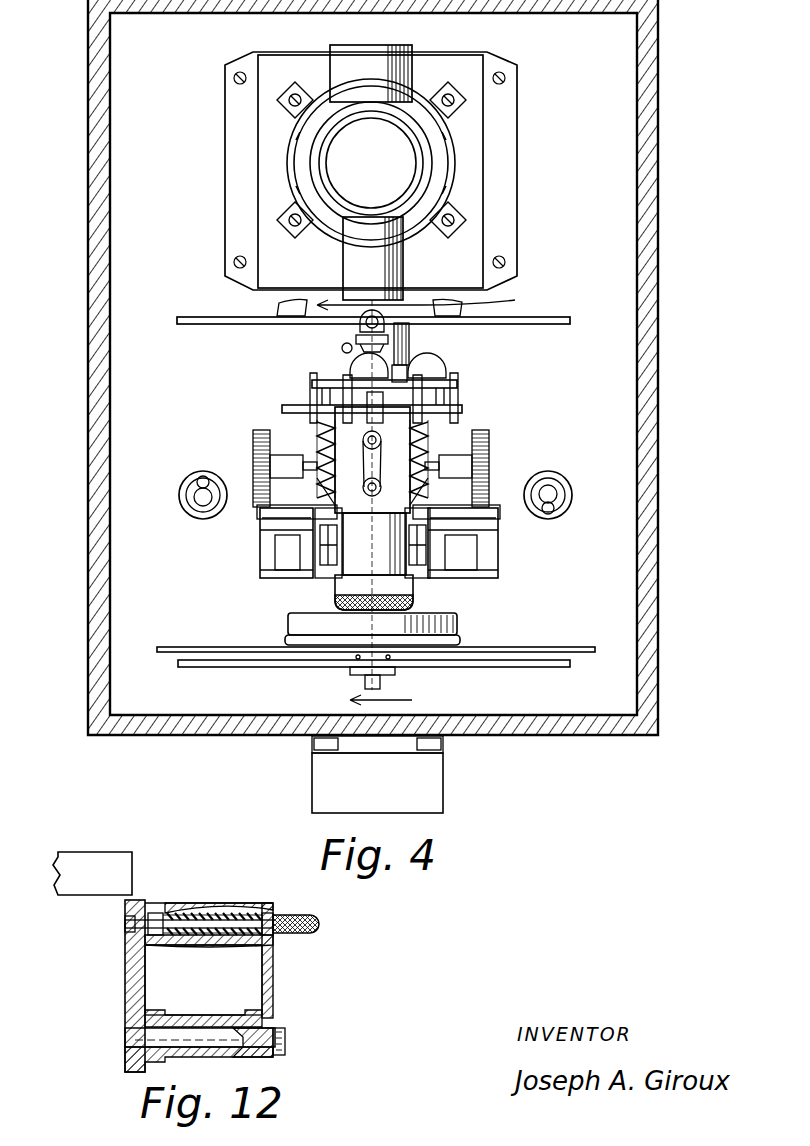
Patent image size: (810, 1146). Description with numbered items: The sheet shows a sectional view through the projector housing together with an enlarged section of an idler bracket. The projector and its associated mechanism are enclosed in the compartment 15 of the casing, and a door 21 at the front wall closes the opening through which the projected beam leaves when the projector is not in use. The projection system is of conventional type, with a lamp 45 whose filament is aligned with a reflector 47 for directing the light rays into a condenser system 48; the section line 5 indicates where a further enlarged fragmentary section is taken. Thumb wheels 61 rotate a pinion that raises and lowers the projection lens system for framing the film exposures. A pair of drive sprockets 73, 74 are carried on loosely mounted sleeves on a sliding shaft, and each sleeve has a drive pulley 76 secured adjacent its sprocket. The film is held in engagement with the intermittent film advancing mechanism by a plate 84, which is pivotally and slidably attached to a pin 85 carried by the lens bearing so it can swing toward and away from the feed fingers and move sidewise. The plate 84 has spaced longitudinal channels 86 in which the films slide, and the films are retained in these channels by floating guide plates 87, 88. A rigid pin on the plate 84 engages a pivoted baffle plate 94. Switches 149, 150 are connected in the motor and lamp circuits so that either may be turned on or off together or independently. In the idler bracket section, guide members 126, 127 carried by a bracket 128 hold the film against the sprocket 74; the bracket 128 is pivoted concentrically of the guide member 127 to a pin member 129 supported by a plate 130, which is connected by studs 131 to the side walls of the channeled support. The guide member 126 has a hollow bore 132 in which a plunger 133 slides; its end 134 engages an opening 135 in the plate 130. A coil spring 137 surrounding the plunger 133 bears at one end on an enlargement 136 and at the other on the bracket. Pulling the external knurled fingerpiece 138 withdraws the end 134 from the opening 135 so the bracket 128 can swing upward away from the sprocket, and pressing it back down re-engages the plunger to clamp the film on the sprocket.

In FIG. 4, the compartment 15 is at (572, 737).
In FIG. 4, the door 21 is at (428, 781).
In FIG. 4, the lamp 45 is at (398, 164).
In FIG. 4, the reflector 47 is at (400, 50).
In FIG. 4, the condenser system 48 is at (402, 263).
In FIG. 4, the section line 5- 5 is at (426, 501).
In FIG. 4, the thumb wheels 61 is at (255, 452).
In FIG. 4, the drive sprocket 73 is at (295, 548).
In FIG. 4, the drive sprocket 74 is at (455, 553).
In FIG. 4, the drive pulley 76 is at (325, 568).
In FIG. 4, the plate 84 is at (455, 392).
In FIG. 4, the pin 85 is at (286, 405).
In FIG. 4, the longitudinal channels 86 is at (352, 378).
In FIG. 4, the floating guide plate 87 is at (356, 380).
In FIG. 4, the floating guide plate 88 is at (420, 373).
In FIG. 4, the baffle plate 94 is at (553, 318).
In FIG. 4, the switch 149 is at (555, 498).
In FIG. 4, the switch 150 is at (190, 503).
In FIG. 12, the guide member 126 is at (235, 905).
In FIG. 12, the guide member 127 is at (208, 1015).
In FIG. 12, the bracket 128 is at (273, 982).
In FIG. 12, the pin member 129 is at (162, 1042).
In FIG. 12, the plate 130 is at (125, 1012).
In FIG. 12, the studs 131 is at (83, 853).
In FIG. 12, the hollow bore 132 is at (201, 913).
In FIG. 12, the plunger 133 is at (270, 906).
In FIG. 12, the plunger end 134 is at (130, 932).
In FIG. 12, the opening 135 is at (125, 924).
In FIG. 12, the enlargement 136 is at (155, 913).
In FIG. 12, the coil spring 137 is at (215, 913).
In FIG. 12, the knurled fingerpiece 138 is at (314, 918).